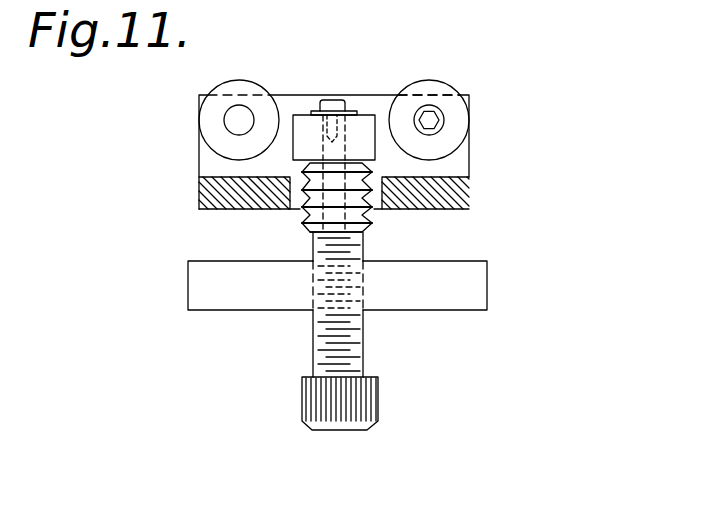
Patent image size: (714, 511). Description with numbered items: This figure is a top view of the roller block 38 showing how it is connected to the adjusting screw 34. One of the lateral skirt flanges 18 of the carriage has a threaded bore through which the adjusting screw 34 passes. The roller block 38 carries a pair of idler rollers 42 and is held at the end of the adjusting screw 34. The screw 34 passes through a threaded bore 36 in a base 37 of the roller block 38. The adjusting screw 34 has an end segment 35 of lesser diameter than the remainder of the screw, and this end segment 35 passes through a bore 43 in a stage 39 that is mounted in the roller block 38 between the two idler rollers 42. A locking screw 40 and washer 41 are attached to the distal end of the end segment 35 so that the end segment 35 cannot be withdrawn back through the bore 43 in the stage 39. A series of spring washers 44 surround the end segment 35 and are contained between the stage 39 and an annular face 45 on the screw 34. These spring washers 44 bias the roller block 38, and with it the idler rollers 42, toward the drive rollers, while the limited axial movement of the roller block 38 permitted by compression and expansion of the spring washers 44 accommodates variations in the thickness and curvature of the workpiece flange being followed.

The lateral skirt flange 18 is at (476, 280).
The adjusting screw 34 is at (363, 335).
The end segment 35 is at (400, 220).
The threaded bore 36 is at (265, 210).
The base 37 is at (205, 192).
The roller block 38 is at (199, 164).
The stage 39 is at (293, 114).
The locking screw 40 is at (338, 100).
The washer 41 is at (310, 112).
The idler rollers 42 is at (199, 108).
The bore 43 is at (371, 108).
The spring washers 44 is at (316, 262).
The annular face 45 is at (372, 232).